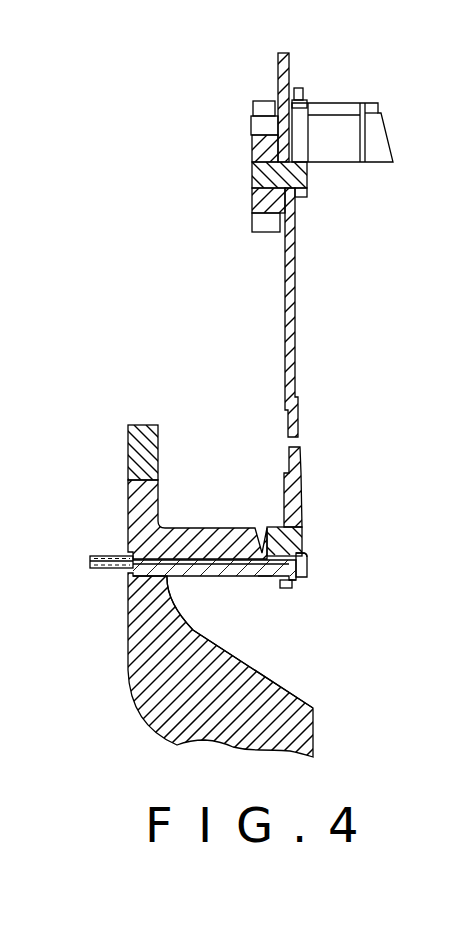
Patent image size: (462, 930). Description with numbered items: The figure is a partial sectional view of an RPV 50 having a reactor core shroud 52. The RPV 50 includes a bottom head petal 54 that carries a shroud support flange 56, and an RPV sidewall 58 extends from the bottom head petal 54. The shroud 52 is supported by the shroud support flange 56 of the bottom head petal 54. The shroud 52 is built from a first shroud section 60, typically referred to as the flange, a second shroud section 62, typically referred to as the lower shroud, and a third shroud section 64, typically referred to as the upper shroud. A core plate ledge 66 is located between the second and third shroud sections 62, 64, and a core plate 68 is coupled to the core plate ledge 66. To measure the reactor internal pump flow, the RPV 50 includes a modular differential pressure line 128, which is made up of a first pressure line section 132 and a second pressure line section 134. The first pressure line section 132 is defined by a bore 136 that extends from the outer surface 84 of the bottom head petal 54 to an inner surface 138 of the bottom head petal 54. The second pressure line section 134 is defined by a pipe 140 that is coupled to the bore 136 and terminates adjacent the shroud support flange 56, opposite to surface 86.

The RPV 50 is at (227, 78).
The reactor core shroud 52 is at (270, 388).
The bottom head petal 54 is at (162, 733).
The shroud support flange 56 is at (307, 561).
The RPV sidewall 58 is at (128, 452).
The first shroud section 60 is at (289, 463).
The second shroud section 62 is at (285, 319).
The third shroud section 64 is at (290, 67).
The core plate ledge 66 is at (307, 177).
The core plate 68 is at (348, 102).
The outer surface 84 is at (127, 677).
The surface 86 is at (303, 557).
The modular differential pressure line 128 is at (210, 577).
The first pressure line section 132 is at (197, 566).
The second pressure line section 134 is at (294, 585).
The bore 136 is at (90, 565).
The inner surface 138 is at (265, 577).
The pipe 140 is at (285, 588).